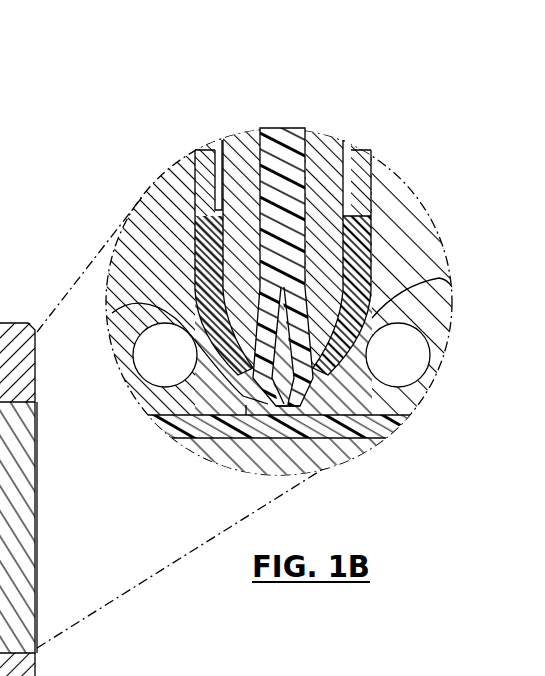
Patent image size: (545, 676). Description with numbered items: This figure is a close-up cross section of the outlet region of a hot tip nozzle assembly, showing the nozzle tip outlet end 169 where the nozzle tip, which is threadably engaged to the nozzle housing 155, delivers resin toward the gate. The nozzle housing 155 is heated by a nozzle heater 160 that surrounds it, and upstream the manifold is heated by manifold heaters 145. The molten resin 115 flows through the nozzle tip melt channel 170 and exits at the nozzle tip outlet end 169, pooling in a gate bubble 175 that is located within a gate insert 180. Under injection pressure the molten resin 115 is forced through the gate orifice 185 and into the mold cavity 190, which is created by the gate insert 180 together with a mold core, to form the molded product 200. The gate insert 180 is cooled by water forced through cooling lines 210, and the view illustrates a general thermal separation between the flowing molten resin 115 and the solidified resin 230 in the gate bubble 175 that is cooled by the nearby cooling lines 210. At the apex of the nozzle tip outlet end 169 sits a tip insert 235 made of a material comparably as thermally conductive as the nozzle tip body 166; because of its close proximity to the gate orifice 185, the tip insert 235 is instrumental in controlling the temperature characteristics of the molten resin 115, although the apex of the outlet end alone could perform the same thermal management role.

The molten resin 115 is at (288, 128).
The manifold heater 145 is at (0, 480).
The nozzle housing 155 is at (372, 197).
The nozzle heater 160 is at (0, 601).
The nozzle tip body 166 is at (330, 143).
The nozzle tip outlet end 169 is at (372, 270).
The nozzle tip melt channel 170 is at (197, 246).
The gate bubble 175 is at (112, 314).
The gate insert 180 is at (188, 216).
The gate orifice 185 is at (292, 407).
The mold cavity 190 is at (313, 438).
The molded product 200 is at (383, 436).
The cooling line 210 is at (134, 362).
The solidified resin 230 is at (452, 285).
The tip insert 235 is at (250, 405).